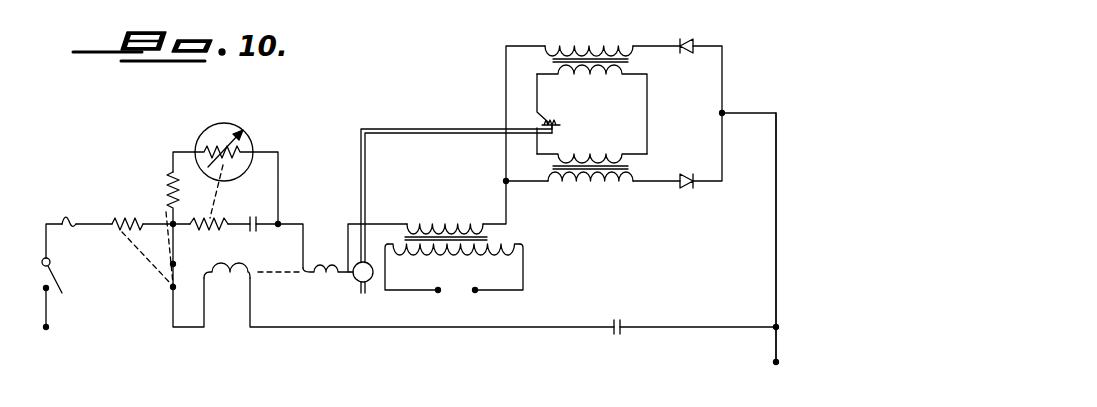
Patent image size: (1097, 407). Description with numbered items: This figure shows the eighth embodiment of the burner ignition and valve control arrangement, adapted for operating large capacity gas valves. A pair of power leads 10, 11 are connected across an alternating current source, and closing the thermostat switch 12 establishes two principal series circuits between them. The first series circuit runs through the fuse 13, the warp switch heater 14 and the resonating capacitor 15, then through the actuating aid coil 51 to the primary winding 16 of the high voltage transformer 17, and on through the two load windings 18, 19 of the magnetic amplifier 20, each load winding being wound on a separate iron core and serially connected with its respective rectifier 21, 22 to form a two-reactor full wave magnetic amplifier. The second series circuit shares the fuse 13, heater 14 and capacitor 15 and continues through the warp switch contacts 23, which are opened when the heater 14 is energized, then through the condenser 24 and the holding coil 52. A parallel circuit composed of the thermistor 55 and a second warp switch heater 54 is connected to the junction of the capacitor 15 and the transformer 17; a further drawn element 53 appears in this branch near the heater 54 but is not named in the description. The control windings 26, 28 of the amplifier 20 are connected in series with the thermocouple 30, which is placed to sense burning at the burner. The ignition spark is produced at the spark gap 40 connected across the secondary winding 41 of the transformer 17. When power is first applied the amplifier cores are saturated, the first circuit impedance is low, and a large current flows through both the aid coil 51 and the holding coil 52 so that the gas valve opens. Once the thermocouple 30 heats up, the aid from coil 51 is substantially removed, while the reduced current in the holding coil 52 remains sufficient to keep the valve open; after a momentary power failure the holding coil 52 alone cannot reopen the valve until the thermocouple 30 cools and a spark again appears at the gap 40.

The power lead 10 is at (46, 327).
The power lead 11 is at (776, 240).
The thermostat switch 12 is at (56, 271).
The fuse 13 is at (62, 223).
The warp switch heater 14 is at (128, 222).
The resonating capacitor 15 is at (258, 233).
The primary winding 16 is at (445, 222).
The high voltage transformer 17 is at (498, 236).
The load winding 18 is at (598, 46).
The load winding 19 is at (586, 188).
The magnetic amplifier 20 is at (499, 124).
The rectifier 21 is at (690, 42).
The rectifier 22 is at (689, 187).
The warp switch contacts 23 is at (173, 287).
The condenser 24 is at (625, 318).
The control winding 26 is at (594, 78).
The control winding 28 is at (583, 154).
The thermocouple 30 is at (537, 112).
The spark gap 40 is at (454, 294).
The secondary winding 41 is at (526, 244).
The actuation aid coil 51 is at (322, 281).
The holding coil 52 is at (240, 278).
The resistor 53 is at (208, 230).
The warp switch heater 54 is at (173, 170).
The thermistor 55 is at (240, 128).